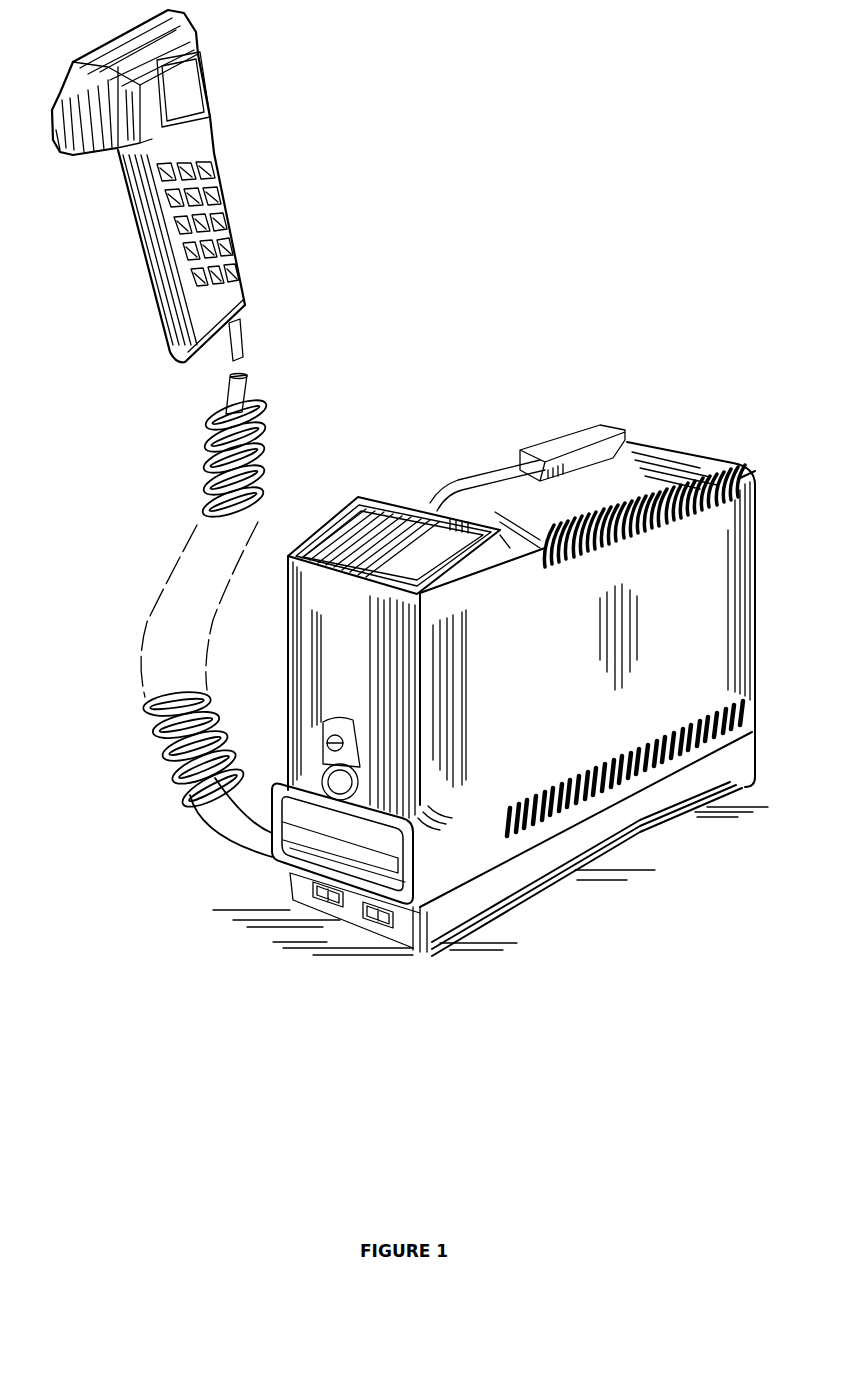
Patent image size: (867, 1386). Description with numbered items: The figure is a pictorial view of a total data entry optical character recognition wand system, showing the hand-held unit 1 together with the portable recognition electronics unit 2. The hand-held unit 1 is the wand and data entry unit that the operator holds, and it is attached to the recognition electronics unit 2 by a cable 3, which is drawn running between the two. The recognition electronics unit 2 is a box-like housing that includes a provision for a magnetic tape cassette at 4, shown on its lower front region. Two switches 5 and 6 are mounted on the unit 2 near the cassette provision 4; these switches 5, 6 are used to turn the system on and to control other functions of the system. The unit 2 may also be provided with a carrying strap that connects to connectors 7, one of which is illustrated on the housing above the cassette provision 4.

The hand-held unit 1 is at (219, 177).
The recognition electronics unit 2 is at (688, 450).
The cable 3 is at (255, 400).
The provision for a magnetic tape cassette 4 is at (305, 813).
The switch 5 is at (330, 900).
The switch 6 is at (377, 917).
The connector 7 is at (290, 777).